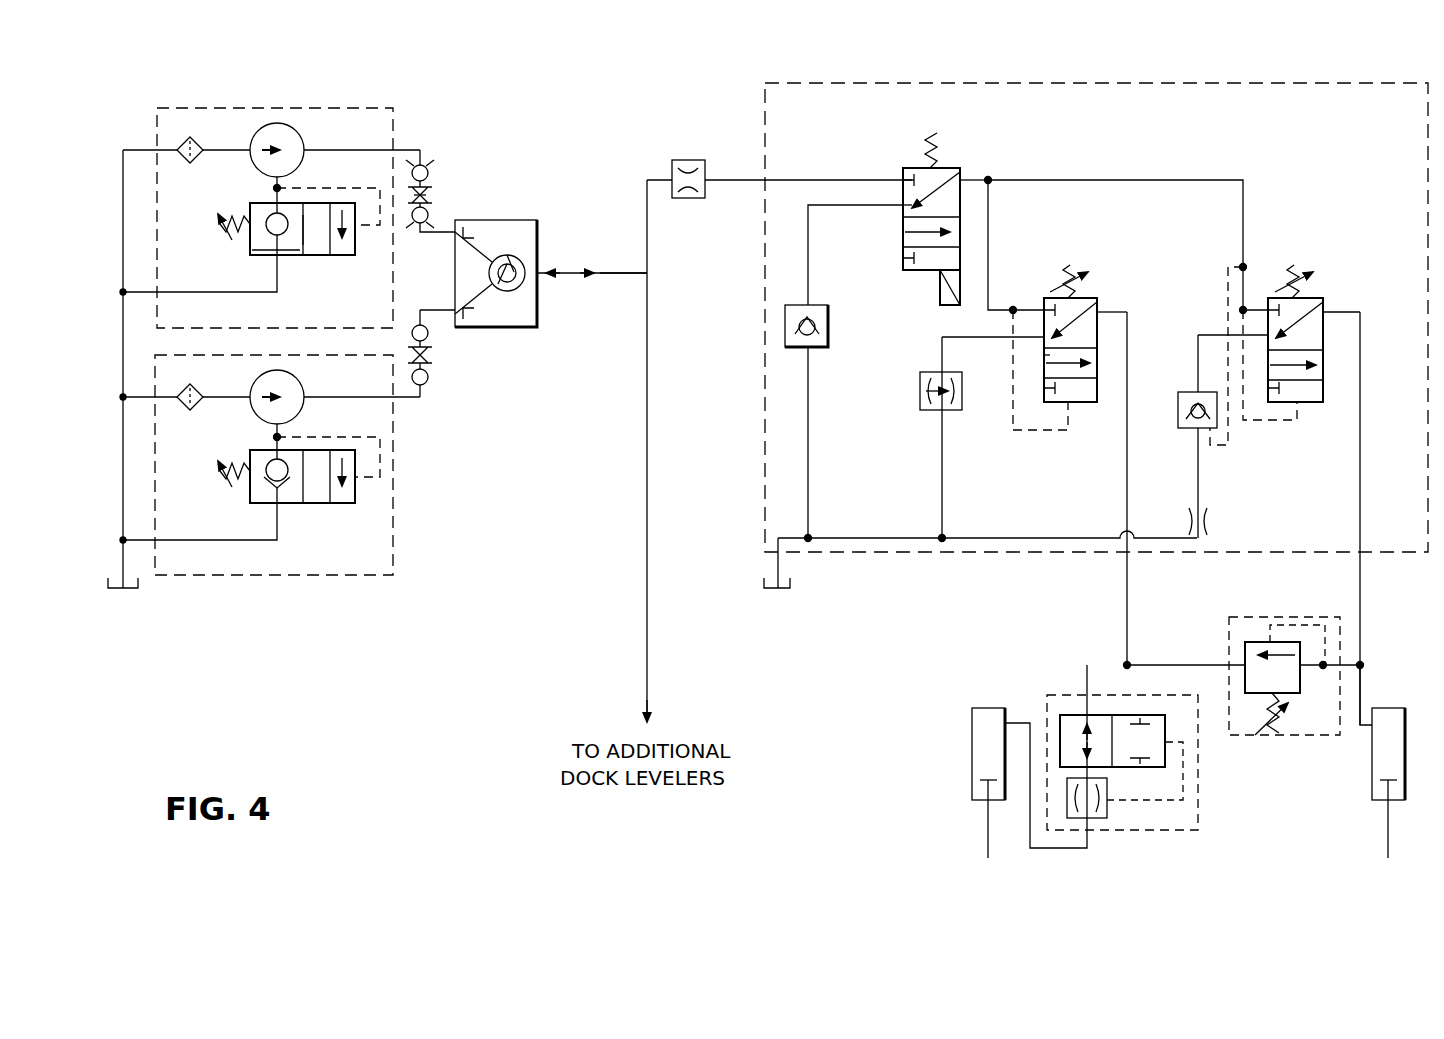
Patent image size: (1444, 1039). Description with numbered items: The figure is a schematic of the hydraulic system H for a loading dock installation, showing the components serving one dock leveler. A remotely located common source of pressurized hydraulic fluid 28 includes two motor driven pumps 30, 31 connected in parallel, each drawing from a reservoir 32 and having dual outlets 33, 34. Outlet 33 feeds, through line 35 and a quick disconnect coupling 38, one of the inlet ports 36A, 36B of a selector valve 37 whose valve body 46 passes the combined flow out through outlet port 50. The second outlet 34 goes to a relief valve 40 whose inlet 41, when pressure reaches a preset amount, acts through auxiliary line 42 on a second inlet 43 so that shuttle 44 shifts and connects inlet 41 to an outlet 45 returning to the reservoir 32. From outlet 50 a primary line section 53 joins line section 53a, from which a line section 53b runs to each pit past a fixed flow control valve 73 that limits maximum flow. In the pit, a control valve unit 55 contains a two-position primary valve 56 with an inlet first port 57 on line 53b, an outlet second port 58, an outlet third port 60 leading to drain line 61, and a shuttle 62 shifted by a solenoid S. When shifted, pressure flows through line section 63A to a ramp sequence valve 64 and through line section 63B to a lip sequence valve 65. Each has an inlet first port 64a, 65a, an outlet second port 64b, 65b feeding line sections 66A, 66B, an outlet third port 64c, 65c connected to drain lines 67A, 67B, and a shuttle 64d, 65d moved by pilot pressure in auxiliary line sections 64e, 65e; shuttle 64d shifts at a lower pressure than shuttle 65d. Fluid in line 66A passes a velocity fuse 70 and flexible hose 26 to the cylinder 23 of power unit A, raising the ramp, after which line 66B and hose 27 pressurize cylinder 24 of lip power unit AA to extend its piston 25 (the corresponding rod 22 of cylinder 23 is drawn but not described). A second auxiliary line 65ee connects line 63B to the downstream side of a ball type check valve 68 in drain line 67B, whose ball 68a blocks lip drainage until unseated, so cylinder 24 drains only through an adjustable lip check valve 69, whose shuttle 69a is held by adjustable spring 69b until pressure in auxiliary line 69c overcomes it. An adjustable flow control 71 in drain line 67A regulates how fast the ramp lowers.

The main cylinder piston rod 22 is at (988, 825).
The cylinder 23 is at (972, 732).
The cylinder 24 is at (1370, 775).
The piston 25 is at (1388, 835).
The flexible hose 26 is at (1052, 848).
The flexible hose 27 is at (1362, 692).
The source of pressurized hydraulic fluid 28 is at (303, 575).
The motor driven pump 30 is at (278, 124).
The motor driven pump 31 is at (265, 410).
The reservoir 32 is at (118, 590).
The pump outlet 33 is at (302, 150).
The pump outlet 34 is at (277, 188).
The line 35 is at (405, 150).
The inlet port 36A is at (456, 230).
The inlet port 36B is at (455, 310).
The selector valve 37 is at (542, 225).
The quick disconnect coupling 38 is at (428, 192).
The relief valve 40 is at (306, 262).
The valve inlet 41 is at (250, 205).
The auxiliary line 42 is at (372, 232).
The second inlet 43 is at (366, 210).
The shuttle 44 is at (310, 240).
The outlet 45 is at (272, 256).
The valve body 46 is at (520, 322).
The outlet port 50 is at (540, 272).
The primary line section 53 is at (626, 276).
The primary line section 53a is at (650, 235).
The line section 53b is at (660, 176).
The control valve unit 55 is at (745, 385).
The primary two position valve 56 is at (893, 272).
The inlet first port 57 is at (903, 200).
The outlet second port 58 is at (960, 178).
The outlet third port 60 is at (905, 205).
The drain line 61 is at (808, 420).
The shuttle 62 is at (905, 225).
The line section 63A is at (990, 225).
The line section 63B is at (1240, 178).
The ramp sequence valve 64 is at (1102, 358).
The inlet first port 64a is at (1043, 310).
The outlet second port 64b is at (1100, 318).
The outlet third port 64c is at (1044, 335).
The shuttle 64d is at (1044, 350).
The auxiliary line section 64e is at (1010, 415).
The lip sequence valve 65 is at (1327, 282).
The inlet first port 65a is at (1262, 300).
The outlet second port 65b is at (1278, 336).
The outlet third port 65c is at (1270, 330).
The shuttle 65d is at (1310, 345).
The auxiliary line section 65e is at (1245, 420).
The second auxiliary line 65ee is at (1225, 275).
The line section 66A is at (1127, 448).
The line section 66B is at (1360, 452).
The drain line 67A is at (940, 445).
The drain line 67B is at (1198, 485).
The ball type check valve 68 is at (1180, 425).
The ball 68a is at (1195, 405).
The lip check valve 69 is at (1230, 655).
The shuttle 69a is at (1340, 630).
The adjustable spring 69b is at (1265, 737).
The auxiliary line section 69c is at (1340, 652).
The velocity fuse 70 is at (1202, 780).
The adjustable flow control 71 is at (920, 388).
The fixed flow control valve 73 is at (698, 160).
The power unit A is at (986, 704).
The power unit AA is at (1410, 772).
The hydraulic system H is at (560, 622).
The solenoid S is at (940, 305).